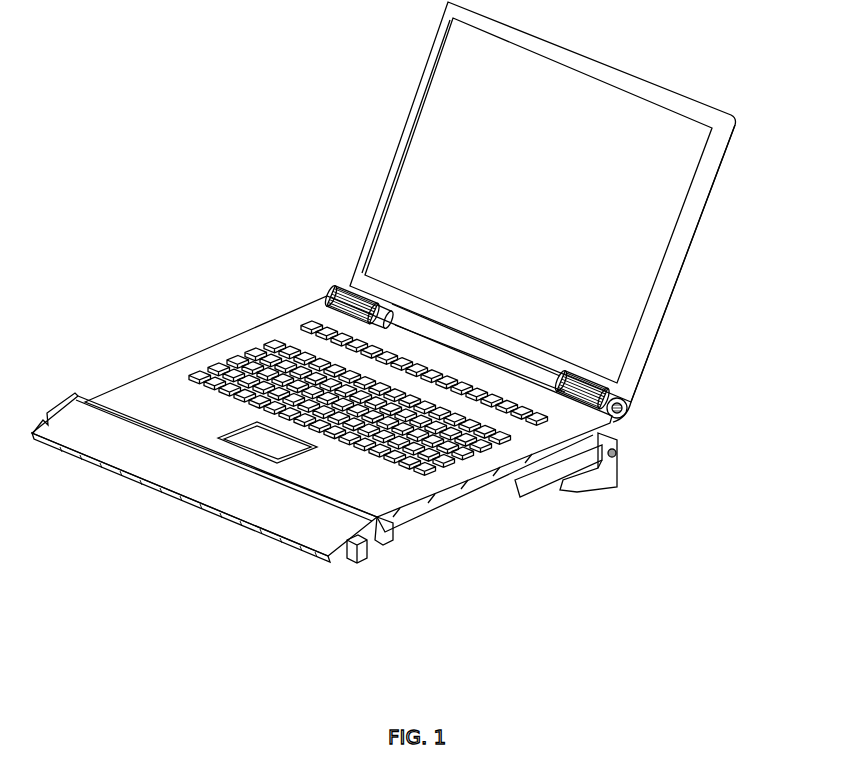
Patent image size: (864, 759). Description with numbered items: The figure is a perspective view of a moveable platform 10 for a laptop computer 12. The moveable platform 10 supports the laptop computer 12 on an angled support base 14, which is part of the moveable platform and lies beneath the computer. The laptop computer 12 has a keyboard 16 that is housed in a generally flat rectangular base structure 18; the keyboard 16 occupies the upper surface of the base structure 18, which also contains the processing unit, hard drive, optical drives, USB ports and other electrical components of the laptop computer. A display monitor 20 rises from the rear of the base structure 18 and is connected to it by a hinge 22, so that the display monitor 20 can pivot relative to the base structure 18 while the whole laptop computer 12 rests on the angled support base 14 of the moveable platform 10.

The moveable platform 10 is at (448, 538).
The laptop computer 12 is at (388, 118).
The angled support base 14 is at (480, 493).
The keyboard 16 is at (267, 342).
The base structure 18 is at (178, 388).
The display monitor 20 is at (672, 288).
The hinge 22 is at (630, 404).